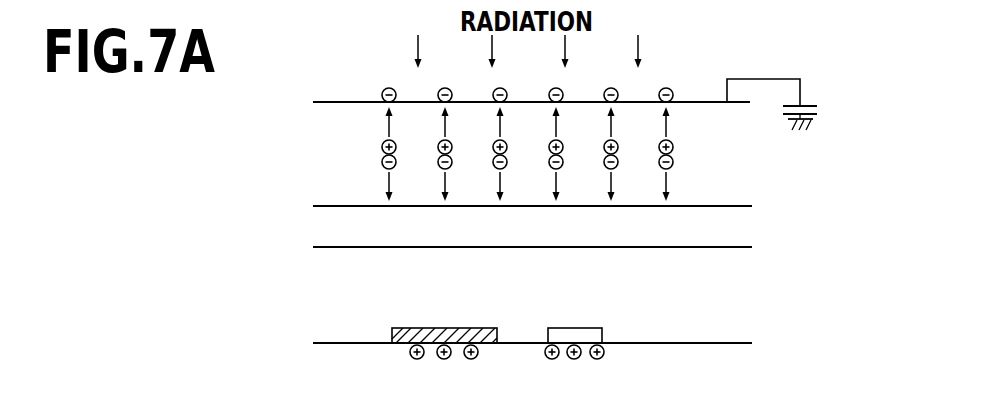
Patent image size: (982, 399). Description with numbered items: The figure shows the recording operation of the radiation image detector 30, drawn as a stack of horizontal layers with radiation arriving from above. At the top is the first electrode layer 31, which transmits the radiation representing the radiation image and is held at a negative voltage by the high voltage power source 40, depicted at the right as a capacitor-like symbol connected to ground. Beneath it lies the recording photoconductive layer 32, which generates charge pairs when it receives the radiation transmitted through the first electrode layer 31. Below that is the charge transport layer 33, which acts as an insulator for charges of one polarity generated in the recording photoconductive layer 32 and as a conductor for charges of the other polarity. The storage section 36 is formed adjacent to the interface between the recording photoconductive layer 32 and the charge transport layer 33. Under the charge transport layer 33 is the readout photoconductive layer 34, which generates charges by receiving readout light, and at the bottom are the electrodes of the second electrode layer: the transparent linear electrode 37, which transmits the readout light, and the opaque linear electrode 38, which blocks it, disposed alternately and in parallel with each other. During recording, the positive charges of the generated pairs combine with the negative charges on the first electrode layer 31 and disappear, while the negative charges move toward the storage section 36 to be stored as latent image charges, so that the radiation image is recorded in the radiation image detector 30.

The radiation image detector 30 is at (739, 39).
The first electrode layer 31 is at (322, 101).
The recording photoconductive layer 32 is at (322, 152).
The charge transport layer 33 is at (322, 226).
The readout photoconductive layer 34 is at (322, 266).
The storage section 36 is at (344, 205).
The transparent linear electrode 37 is at (596, 328).
The opaque linear electrode 38 is at (397, 344).
The high voltage power source 40 is at (793, 104).